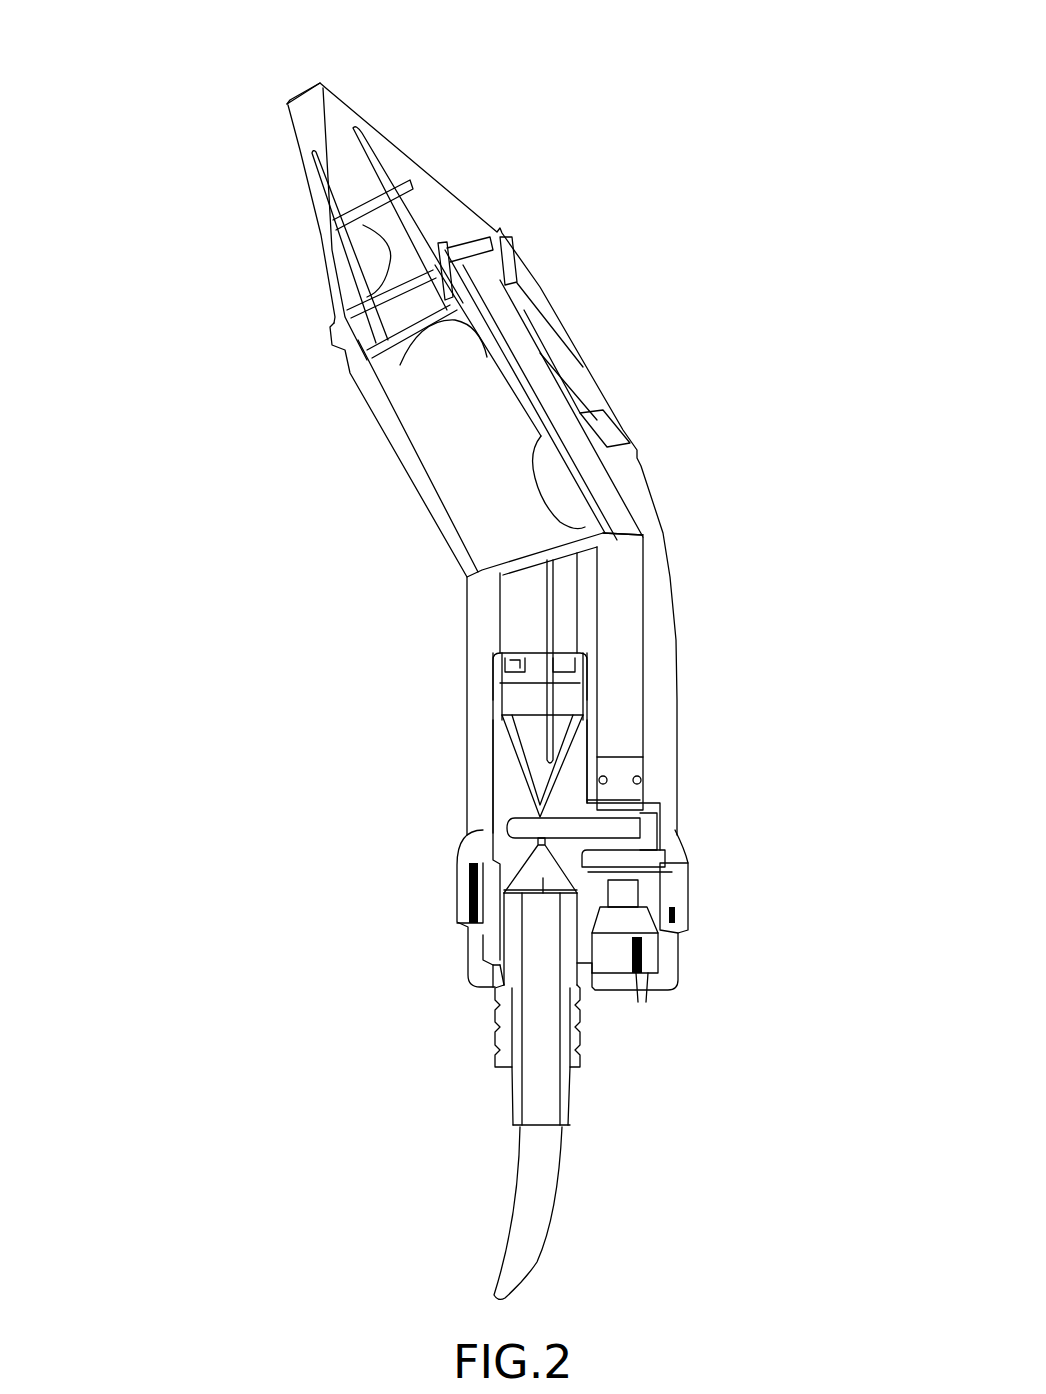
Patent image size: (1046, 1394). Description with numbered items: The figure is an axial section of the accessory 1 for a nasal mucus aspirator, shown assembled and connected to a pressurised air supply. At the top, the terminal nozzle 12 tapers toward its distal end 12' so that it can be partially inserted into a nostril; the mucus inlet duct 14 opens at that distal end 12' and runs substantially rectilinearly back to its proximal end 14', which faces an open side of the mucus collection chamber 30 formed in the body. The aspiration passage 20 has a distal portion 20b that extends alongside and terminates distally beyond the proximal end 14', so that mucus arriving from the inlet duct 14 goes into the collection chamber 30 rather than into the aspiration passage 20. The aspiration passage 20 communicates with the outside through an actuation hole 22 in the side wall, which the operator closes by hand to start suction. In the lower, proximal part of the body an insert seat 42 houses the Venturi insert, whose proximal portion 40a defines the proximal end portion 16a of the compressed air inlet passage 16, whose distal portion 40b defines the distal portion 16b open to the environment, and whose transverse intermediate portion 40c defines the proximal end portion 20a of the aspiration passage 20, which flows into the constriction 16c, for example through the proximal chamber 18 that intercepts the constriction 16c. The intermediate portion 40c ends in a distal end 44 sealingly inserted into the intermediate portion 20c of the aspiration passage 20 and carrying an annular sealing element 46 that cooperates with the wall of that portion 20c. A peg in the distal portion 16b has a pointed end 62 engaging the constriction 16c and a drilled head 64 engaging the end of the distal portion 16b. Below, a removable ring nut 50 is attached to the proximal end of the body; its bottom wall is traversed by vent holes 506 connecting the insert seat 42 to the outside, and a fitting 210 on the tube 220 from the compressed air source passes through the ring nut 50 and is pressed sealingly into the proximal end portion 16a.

The accessory 1 is at (82, 170).
The terminal nozzle 12 is at (482, 459).
The distal end of the terminal nozzle 12' is at (343, 54).
The mucus inlet duct 14 is at (331, 238).
The proximal end of the mucus inlet duct 14' is at (377, 327).
The compressed air inlet passage 16 is at (571, 916).
The proximal end portion of the compressed air inlet passage 16a is at (573, 967).
The distal portion of the compressed air inlet passage 16b is at (500, 760).
The constriction 16c is at (543, 880).
The proximal chamber 18 is at (520, 830).
The aspiration passage 20 is at (625, 635).
The proximal end portion of the aspiration passage 20a is at (622, 797).
The distal portion of the aspiration passage 20b is at (540, 383).
The intermediate portion of the aspiration passage 20c is at (650, 672).
The actuation hole 22 is at (635, 445).
The mucus collection chamber 30 is at (467, 450).
The proximal portion of the Venturi insert 40a is at (478, 988).
The distal portion of the Venturi insert 40b is at (500, 720).
The intermediate portion of the Venturi insert 40c is at (608, 845).
The insert seat 42 is at (507, 780).
The distal end of the intermediate portion 44 is at (660, 800).
The annular sealing element 46 is at (645, 782).
The ring nut 50 is at (672, 963).
The pointed end of the peg 62 is at (537, 800).
The drilled head 64 is at (498, 655).
The fitting 210 is at (500, 1098).
The tube 220 is at (540, 1200).
The vent holes 506 is at (640, 995).